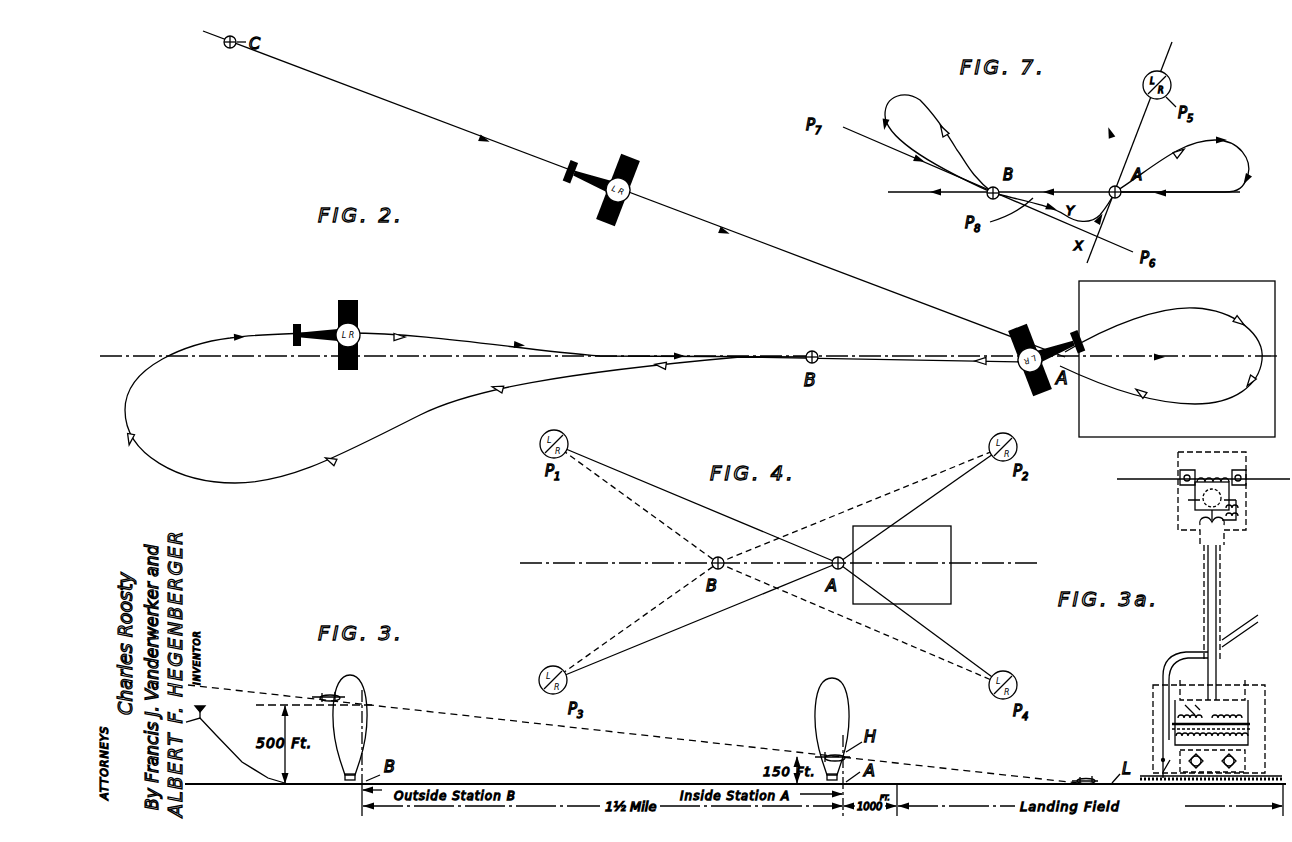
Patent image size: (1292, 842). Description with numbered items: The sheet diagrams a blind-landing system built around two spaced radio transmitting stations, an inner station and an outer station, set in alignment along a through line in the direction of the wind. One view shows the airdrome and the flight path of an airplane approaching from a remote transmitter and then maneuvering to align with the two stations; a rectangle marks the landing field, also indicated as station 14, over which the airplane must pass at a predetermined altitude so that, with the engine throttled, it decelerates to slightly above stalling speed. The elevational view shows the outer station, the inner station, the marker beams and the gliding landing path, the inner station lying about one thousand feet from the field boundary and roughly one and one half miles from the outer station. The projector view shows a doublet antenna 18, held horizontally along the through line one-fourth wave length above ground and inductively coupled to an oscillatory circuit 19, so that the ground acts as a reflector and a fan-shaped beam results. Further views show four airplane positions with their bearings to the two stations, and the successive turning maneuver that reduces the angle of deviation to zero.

In FIG. 2, the station 14 is at (1228, 291).
In FIG. 4, the station 14 is at (943, 552).
In FIG. 3, the doublet antenna 18 is at (344, 772).
In FIG. 3A, the doublet antenna 18 is at (1150, 481).
In FIG. 3A, the oscillatory circuit 19 is at (1237, 522).